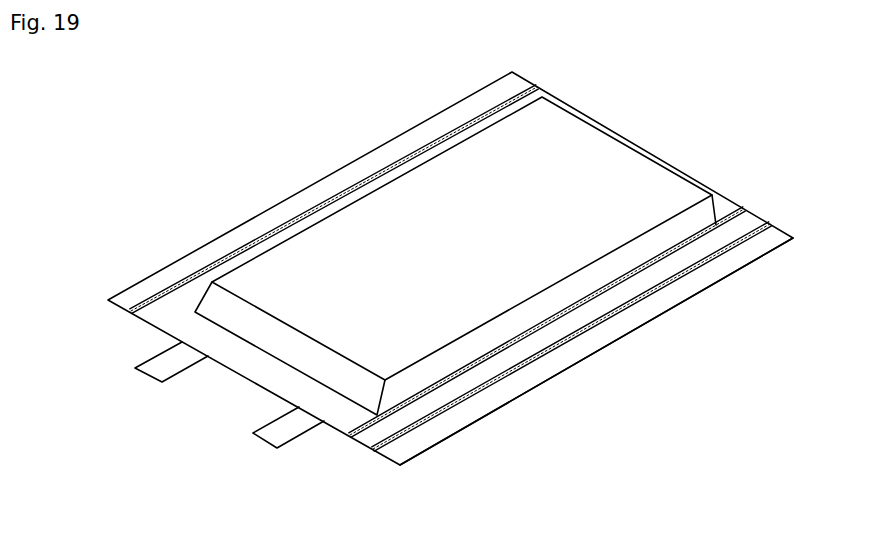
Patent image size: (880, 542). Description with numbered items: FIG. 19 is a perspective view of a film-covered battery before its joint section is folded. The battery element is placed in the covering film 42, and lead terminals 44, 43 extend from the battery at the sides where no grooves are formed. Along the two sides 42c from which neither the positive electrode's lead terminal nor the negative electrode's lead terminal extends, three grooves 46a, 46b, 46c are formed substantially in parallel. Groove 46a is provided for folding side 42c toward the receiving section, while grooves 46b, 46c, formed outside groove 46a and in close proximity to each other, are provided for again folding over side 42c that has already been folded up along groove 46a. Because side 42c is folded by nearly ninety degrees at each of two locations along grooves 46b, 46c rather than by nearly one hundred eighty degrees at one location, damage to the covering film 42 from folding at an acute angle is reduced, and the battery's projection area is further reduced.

The covering film 42 is at (450, 268).
The side 42c is at (596, 356).
The negative electrode tab 43 is at (273, 435).
The lead terminal 44 is at (157, 368).
The groove 46a is at (93, 326).
The groove 46b is at (454, 268).
The groove 46c is at (493, 248).